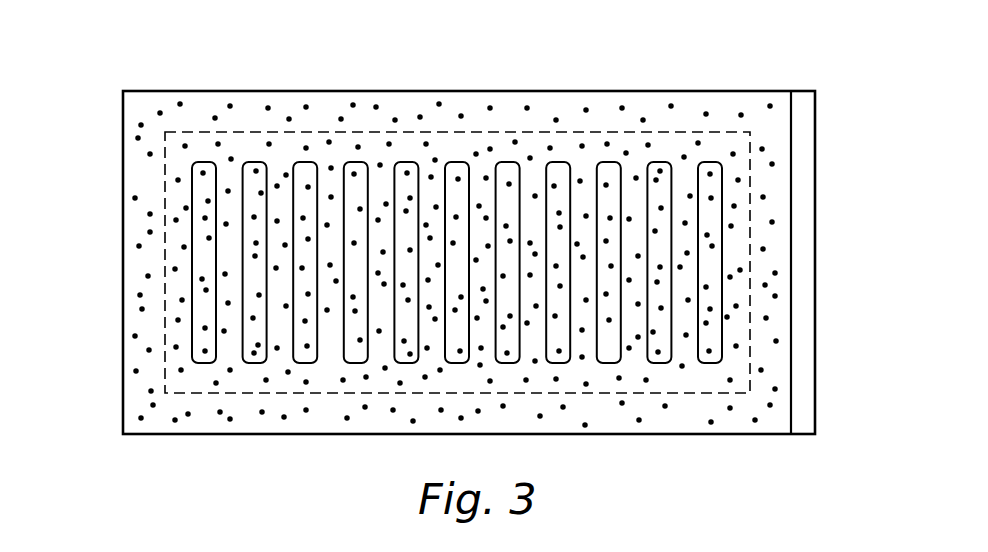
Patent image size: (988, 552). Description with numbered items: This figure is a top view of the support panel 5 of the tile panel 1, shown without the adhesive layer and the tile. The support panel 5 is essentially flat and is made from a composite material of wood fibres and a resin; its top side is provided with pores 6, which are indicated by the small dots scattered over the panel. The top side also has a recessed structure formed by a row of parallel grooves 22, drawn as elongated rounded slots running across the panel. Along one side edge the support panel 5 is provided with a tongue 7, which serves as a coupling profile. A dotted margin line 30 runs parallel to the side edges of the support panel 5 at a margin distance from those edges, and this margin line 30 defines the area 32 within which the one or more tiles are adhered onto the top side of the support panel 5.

The filter element / composite component 1 is at (94, 83).
The matrix / body layer 5 is at (512, 115).
The particles 6 is at (686, 372).
The edge strip / frame portion 7 is at (815, 261).
The slots / channels 22 is at (207, 265).
The dashed boundary region 30 is at (162, 175).
The web between slots 32 is at (331, 334).